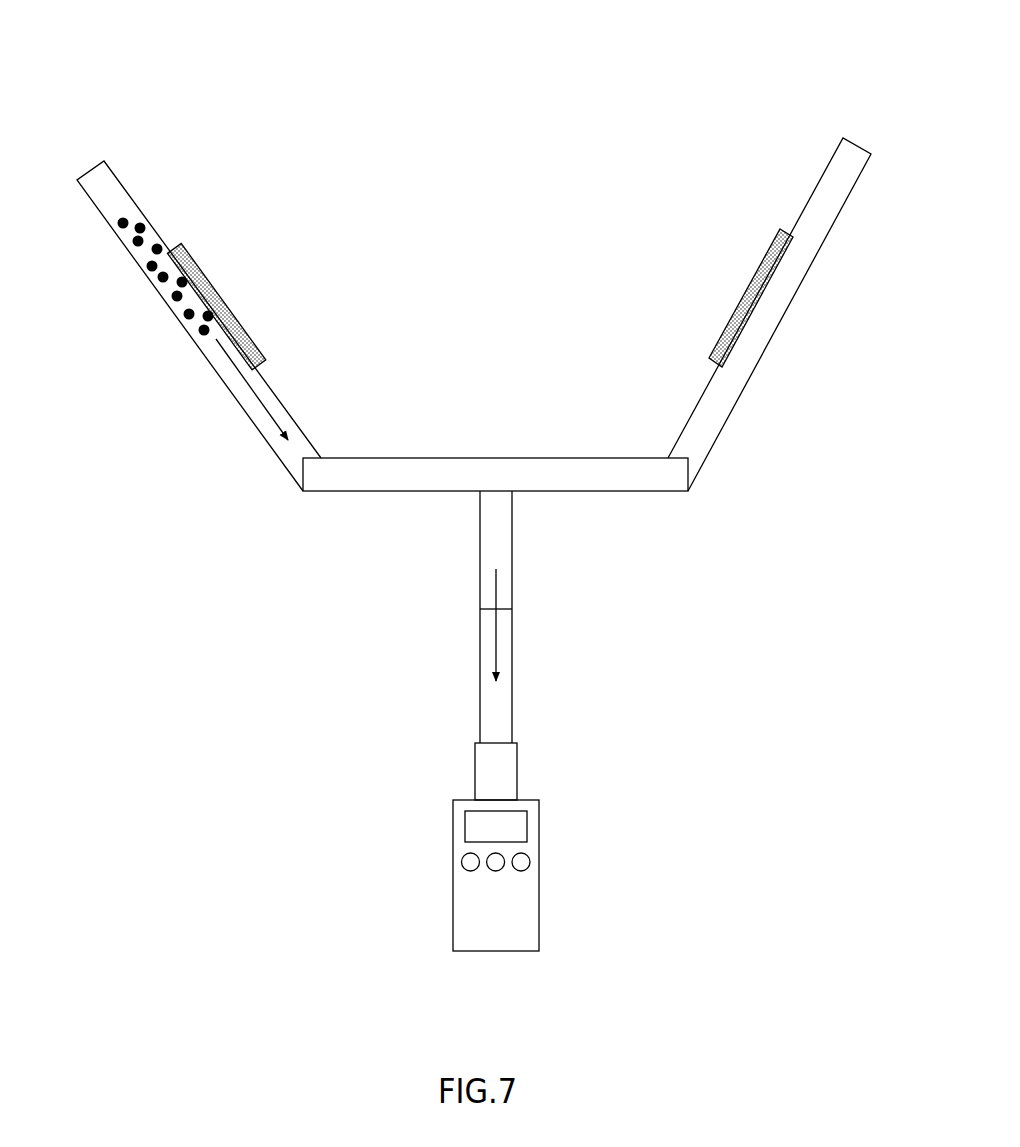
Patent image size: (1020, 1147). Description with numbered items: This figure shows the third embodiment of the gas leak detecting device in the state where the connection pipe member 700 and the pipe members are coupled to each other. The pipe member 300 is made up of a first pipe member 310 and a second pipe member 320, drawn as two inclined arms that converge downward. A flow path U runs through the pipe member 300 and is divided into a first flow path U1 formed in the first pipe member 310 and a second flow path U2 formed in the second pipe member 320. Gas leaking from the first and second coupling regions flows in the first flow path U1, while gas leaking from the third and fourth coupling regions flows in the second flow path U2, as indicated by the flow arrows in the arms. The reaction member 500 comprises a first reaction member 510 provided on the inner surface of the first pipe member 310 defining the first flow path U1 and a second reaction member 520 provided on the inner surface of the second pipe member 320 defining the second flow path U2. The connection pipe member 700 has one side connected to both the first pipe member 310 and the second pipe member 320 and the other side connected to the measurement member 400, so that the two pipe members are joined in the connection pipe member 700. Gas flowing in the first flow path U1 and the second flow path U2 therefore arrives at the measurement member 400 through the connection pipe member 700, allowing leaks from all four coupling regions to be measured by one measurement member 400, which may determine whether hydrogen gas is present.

The pipe member 300 is at (488, 30).
The first pipe member 310 is at (124, 334).
The second pipe member 320 is at (824, 340).
The reaction member 500 is at (620, 30).
The first reaction member 510 is at (207, 297).
The second reaction member 520 is at (750, 284).
The flow path U is at (486, 112).
The first flow path U1 is at (242, 386).
The second flow path U2 is at (710, 392).
The connection pipe member 700 is at (407, 470).
The measurement member 400 is at (509, 917).